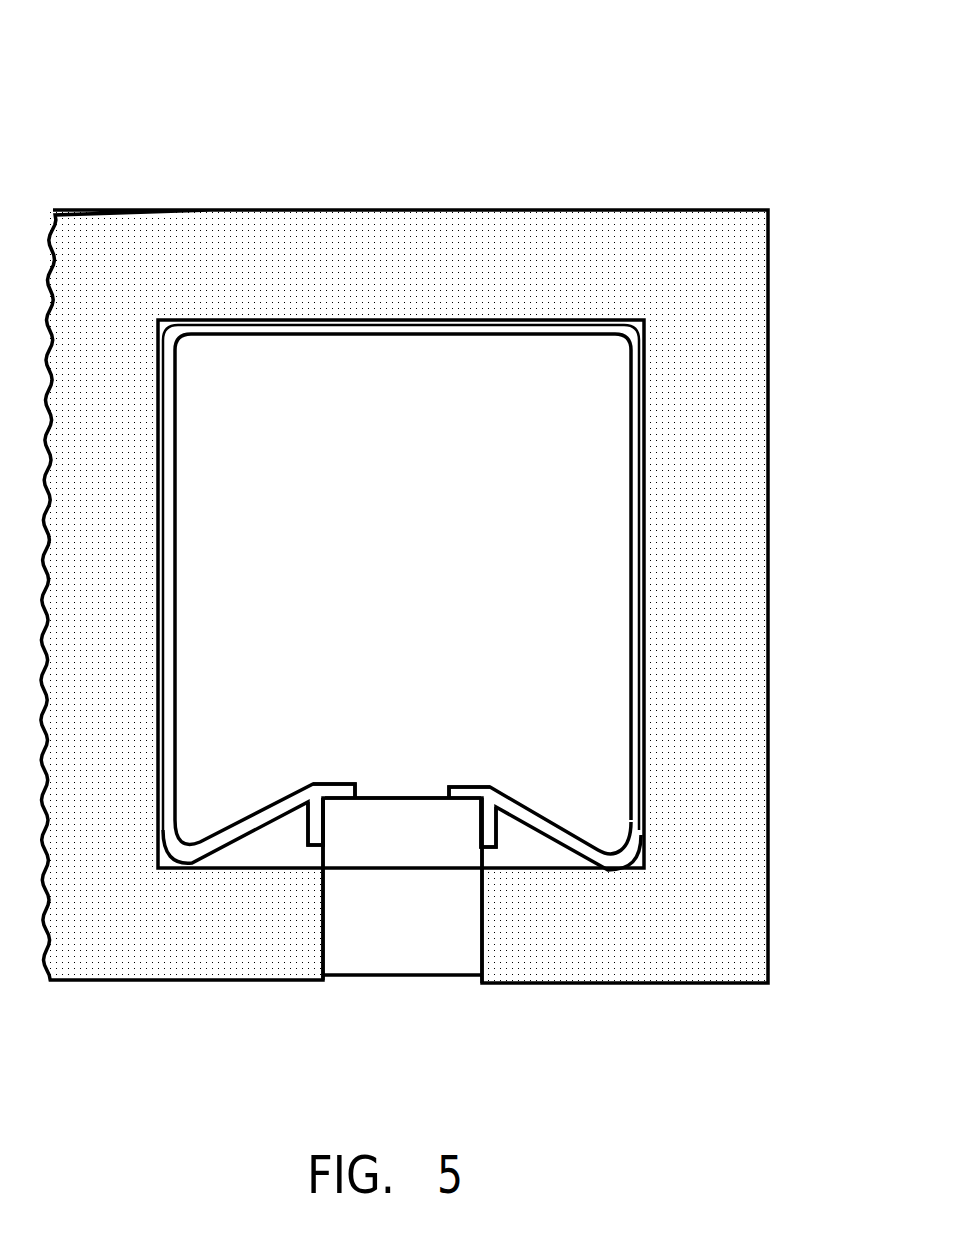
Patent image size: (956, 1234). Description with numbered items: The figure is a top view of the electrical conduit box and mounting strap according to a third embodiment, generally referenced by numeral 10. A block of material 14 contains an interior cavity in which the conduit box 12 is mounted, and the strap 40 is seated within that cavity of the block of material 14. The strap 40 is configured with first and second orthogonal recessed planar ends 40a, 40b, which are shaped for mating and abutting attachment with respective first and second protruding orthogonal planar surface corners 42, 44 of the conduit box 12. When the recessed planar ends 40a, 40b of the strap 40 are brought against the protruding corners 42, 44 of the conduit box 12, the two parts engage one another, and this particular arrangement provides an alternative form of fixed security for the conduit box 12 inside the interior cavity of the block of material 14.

The electrical conduit box mounting strap embodiment 10 is at (205, 107).
The conduit box 12 is at (480, 855).
The block of material 14 is at (750, 282).
The strap 40 is at (630, 531).
The first orthogonal recessed planar end 40a is at (325, 783).
The second orthogonal recessed planar end 40b is at (472, 787).
The first protruding orthogonal planar surface corner 42 is at (330, 799).
The second protruding orthogonal planar surface corner 44 is at (480, 800).